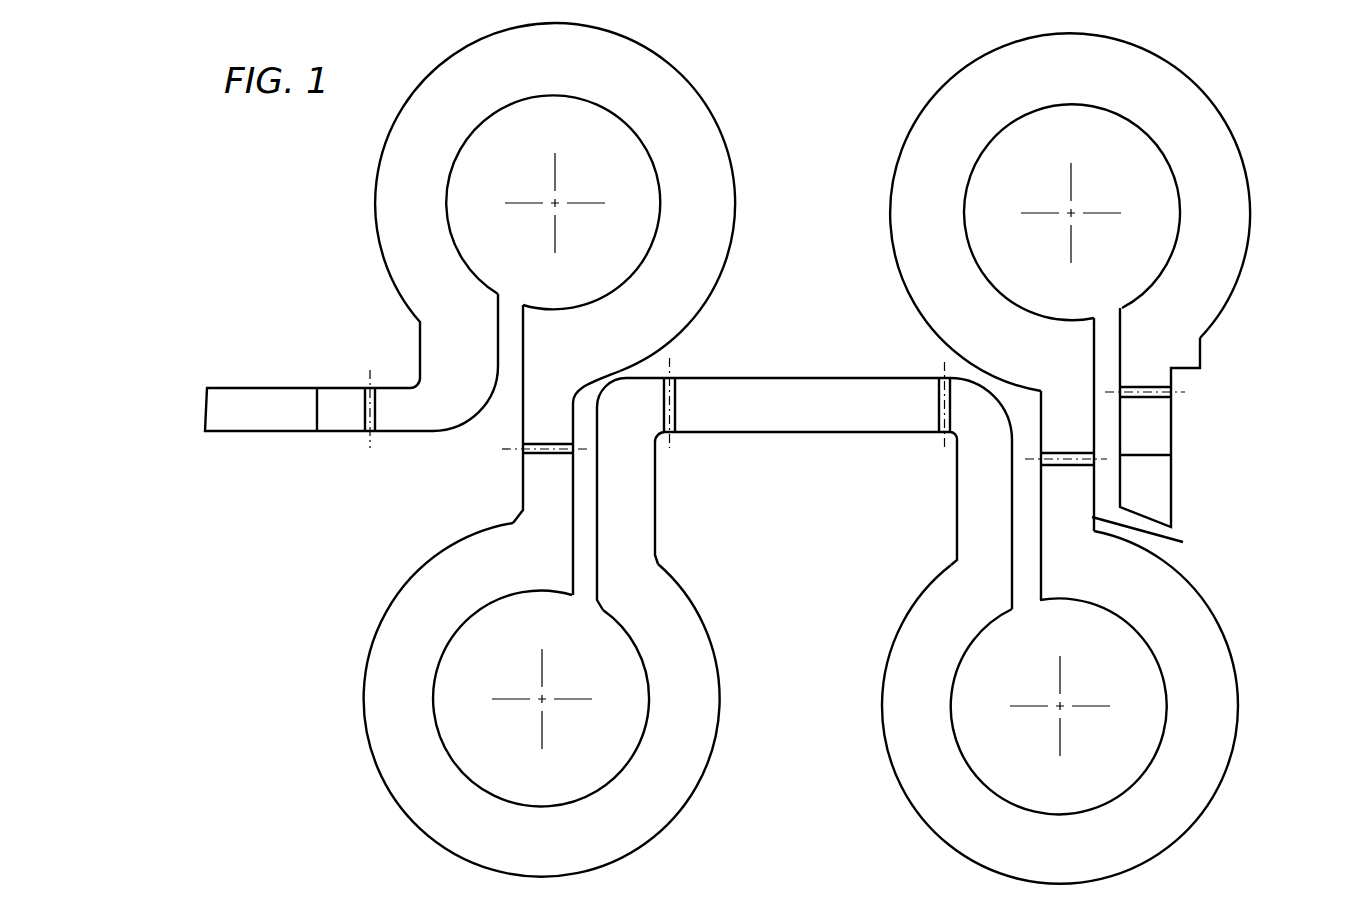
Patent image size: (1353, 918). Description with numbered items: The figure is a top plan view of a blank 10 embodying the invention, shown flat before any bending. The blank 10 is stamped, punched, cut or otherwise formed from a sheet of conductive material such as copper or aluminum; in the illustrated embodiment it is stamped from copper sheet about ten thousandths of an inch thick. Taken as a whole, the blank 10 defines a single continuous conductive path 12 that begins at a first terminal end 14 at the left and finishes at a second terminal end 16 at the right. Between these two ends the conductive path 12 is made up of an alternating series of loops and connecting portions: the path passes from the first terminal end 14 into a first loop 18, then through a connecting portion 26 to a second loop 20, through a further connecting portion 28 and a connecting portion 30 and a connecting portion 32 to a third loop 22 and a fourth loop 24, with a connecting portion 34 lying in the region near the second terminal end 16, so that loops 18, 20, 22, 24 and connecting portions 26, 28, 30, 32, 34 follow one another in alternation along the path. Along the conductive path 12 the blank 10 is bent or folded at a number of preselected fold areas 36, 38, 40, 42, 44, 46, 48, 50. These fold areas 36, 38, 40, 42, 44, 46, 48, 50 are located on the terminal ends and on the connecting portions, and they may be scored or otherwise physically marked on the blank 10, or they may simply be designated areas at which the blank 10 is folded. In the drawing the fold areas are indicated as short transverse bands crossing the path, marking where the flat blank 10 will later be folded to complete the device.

The blank 10 is at (308, 229).
The conductive path 12 is at (789, 364).
The first terminal end 14 is at (332, 433).
The second terminal end 16 is at (1172, 478).
The loop 18 is at (670, 66).
The loop 20 is at (395, 805).
The loop 22 is at (1222, 108).
The loop 24 is at (1212, 798).
The connecting portion 26 is at (522, 478).
The connecting portion 28 is at (657, 512).
The connecting portion 30 is at (803, 434).
The connecting portion 32 is at (957, 505).
The connecting portion 34 is at (1154, 537).
The fold area 36 is at (369, 390).
The fold area 38 is at (521, 447).
The fold area 40 is at (677, 434).
The fold area 42 is at (939, 380).
The fold area 44 is at (1052, 447).
The fold area 46 is at (1180, 394).
The fold area 48 is at (312, 400).
The fold area 50 is at (1170, 455).